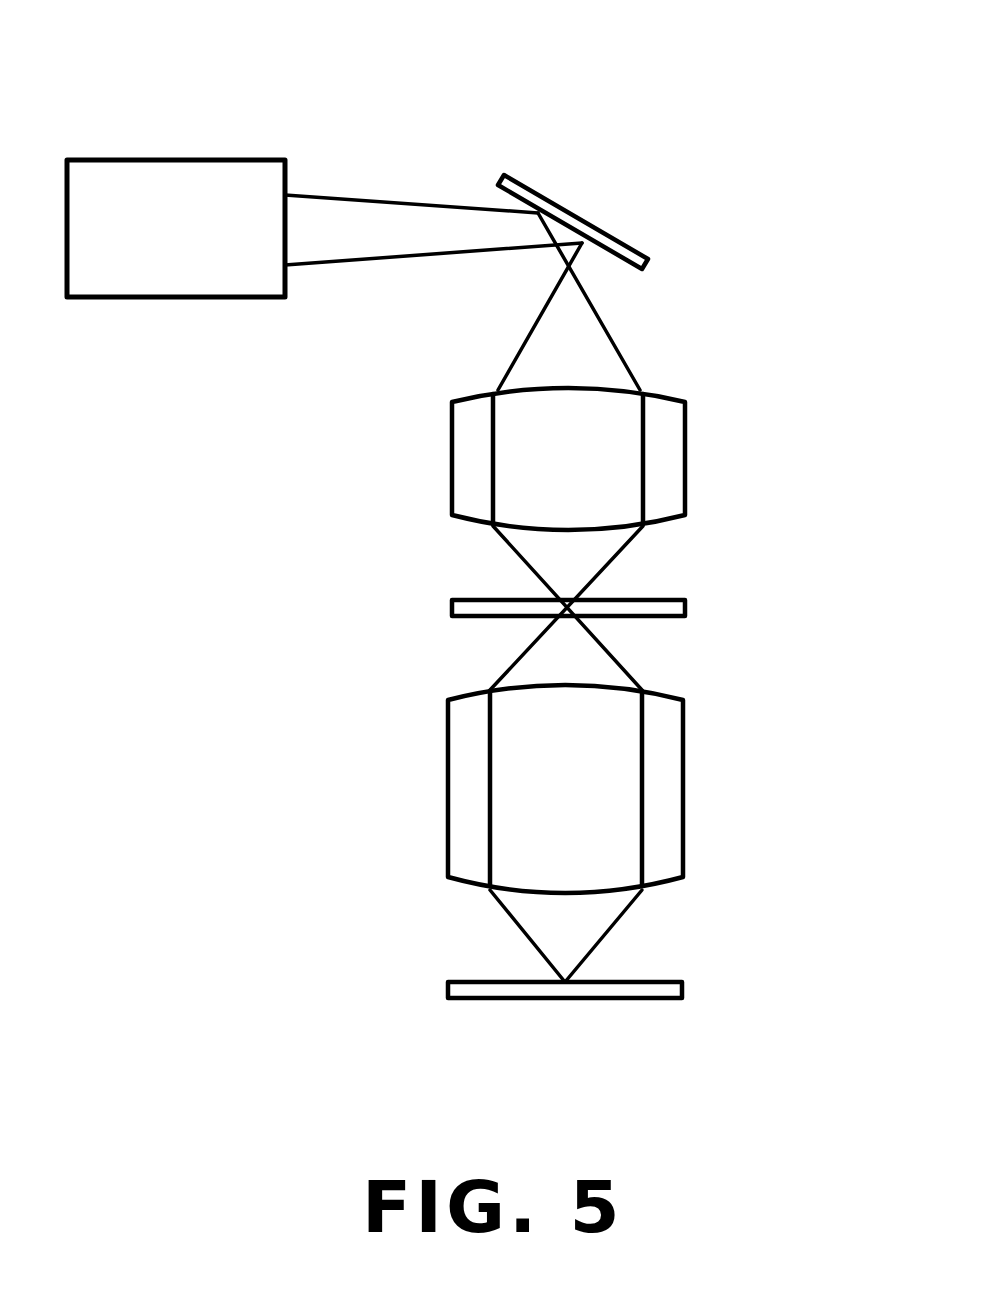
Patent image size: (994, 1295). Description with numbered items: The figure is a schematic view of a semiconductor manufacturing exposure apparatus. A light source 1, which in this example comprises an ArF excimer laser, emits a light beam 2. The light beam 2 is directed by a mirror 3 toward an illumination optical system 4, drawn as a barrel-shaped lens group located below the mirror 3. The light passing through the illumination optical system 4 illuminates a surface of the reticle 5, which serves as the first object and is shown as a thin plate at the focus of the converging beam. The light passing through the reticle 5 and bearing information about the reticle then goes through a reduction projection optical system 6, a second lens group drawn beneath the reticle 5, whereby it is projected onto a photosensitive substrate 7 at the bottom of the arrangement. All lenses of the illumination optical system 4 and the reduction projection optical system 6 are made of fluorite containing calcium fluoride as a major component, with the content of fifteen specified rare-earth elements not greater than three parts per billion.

The light source 1 is at (168, 160).
The light beam 2 is at (620, 343).
The mirror 3 is at (577, 212).
The illumination optical system 4 is at (688, 445).
The reticle 5 is at (643, 600).
The reduction projection optical system 6 is at (618, 755).
The photosensitive substrate 7 is at (640, 980).